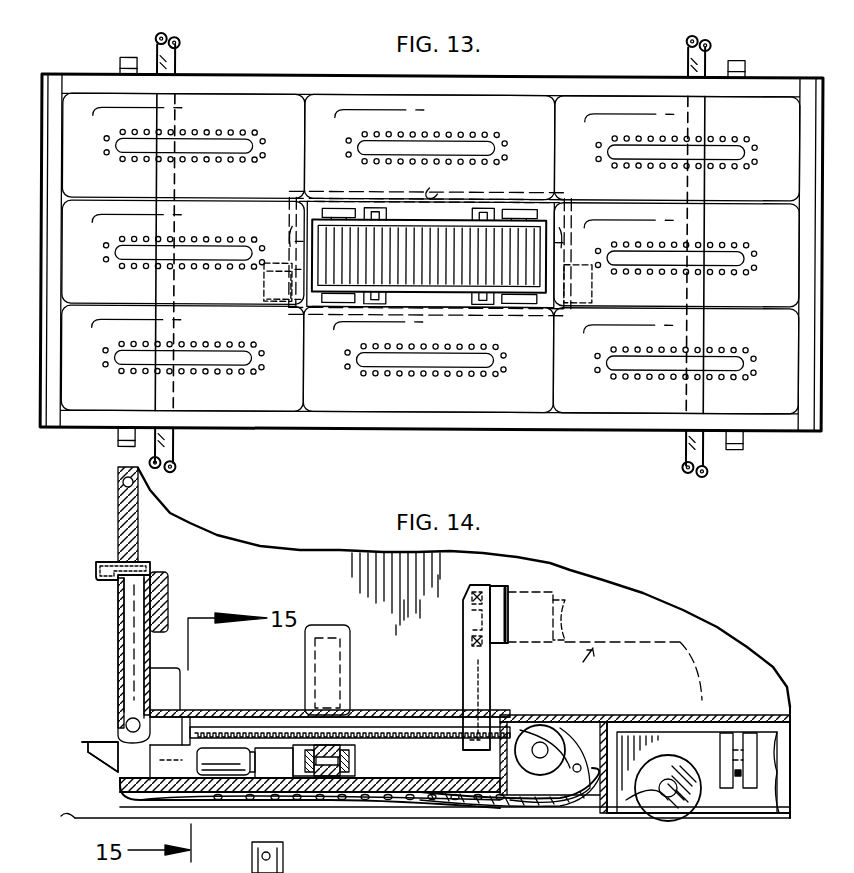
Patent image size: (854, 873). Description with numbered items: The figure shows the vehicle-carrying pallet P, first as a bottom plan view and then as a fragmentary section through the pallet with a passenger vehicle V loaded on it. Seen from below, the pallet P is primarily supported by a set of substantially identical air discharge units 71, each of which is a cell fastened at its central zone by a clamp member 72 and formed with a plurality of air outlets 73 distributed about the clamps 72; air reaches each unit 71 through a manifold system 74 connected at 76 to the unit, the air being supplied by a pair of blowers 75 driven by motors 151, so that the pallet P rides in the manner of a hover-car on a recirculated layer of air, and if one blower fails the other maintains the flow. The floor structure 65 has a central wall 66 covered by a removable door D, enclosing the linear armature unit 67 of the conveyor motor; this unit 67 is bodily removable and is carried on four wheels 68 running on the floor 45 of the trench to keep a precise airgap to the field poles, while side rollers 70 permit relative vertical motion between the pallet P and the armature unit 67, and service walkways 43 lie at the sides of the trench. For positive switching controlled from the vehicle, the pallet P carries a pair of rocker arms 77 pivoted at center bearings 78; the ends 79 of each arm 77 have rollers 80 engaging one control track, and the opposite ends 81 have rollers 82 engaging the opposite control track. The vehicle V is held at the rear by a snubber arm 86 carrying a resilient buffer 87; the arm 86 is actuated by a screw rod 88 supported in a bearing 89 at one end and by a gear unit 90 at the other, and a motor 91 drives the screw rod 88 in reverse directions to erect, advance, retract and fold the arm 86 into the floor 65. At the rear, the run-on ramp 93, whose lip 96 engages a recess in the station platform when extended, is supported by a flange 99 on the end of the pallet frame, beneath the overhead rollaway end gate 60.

In FIG. 13, the flange 99 is at (830, 80).
In FIG. 14, the flange 99 is at (88, 762).
In FIG. 13, the air discharge unit 71 is at (110, 192).
In FIG. 14, the air discharge unit 71 is at (124, 796).
In FIG. 13, the clamp member 72 is at (96, 358).
In FIG. 14, the clamp member 72 is at (406, 806).
In FIG. 13, the air outlets 73 is at (260, 135).
In FIG. 14, the air outlets 73 is at (276, 802).
In FIG. 13, the rocker arm ends 79 is at (175, 61).
In FIG. 14, the rocker arm ends 79 is at (449, 857).
In FIG. 13, the rollers 80 is at (179, 38).
In FIG. 13, the opposite rocker arm ends 81 is at (176, 452).
In FIG. 13, the rollers 82 is at (180, 476).
In FIG. 13, the central wall 66 is at (392, 310).
In FIG. 14, the central wall 66 is at (788, 750).
In FIG. 13, the linear armature unit 67 is at (419, 212).
In FIG. 14, the linear armature unit 67 is at (704, 814).
In FIG. 13, the wheels 68 is at (336, 208).
In FIG. 14, the wheels 68 is at (662, 806).
In FIG. 13, the side rollers 70 is at (374, 210).
In FIG. 14, the side rollers 70 is at (722, 802).
In FIG. 13, the manifold connection 76 is at (282, 249).
In FIG. 14, the manifold connection 76 is at (560, 808).
In FIG. 13, the manifold system 74 is at (530, 322).
In FIG. 14, the manifold system 74 is at (566, 680).
In FIG. 13, the blowers 75 is at (582, 266).
In FIG. 14, the blowers 75 is at (541, 728).
In FIG. 13, the blower motors 151 is at (264, 280).
In FIG. 13, the pallet P is at (315, 48).
In FIG. 14, the pallet P is at (732, 620).
In FIG. 14, the overhead rollaway end gate 60 is at (118, 514).
In FIG. 14, the lip 96 is at (94, 566).
In FIG. 14, the run-on ramp 93 is at (118, 620).
In FIG. 14, the floor structure 65 is at (260, 712).
In FIG. 14, the screw rod 88 is at (402, 736).
In FIG. 14, the motor 91 is at (220, 754).
In FIG. 14, the gear unit 90 is at (184, 774).
In FIG. 14, the rocker arms 77 is at (318, 666).
In FIG. 14, the center bearings 78 is at (356, 764).
In FIG. 14, the snubber arm 86 is at (463, 658).
In FIG. 14, the resilient buffer 87 is at (506, 588).
In FIG. 14, the passenger vehicle V is at (584, 670).
In FIG. 14, the removable door D is at (786, 710).
In FIG. 14, the bearing 89 is at (506, 718).
In FIG. 14, the trench floor 45 is at (68, 820).
In FIG. 14, the service walkways 43 is at (758, 870).